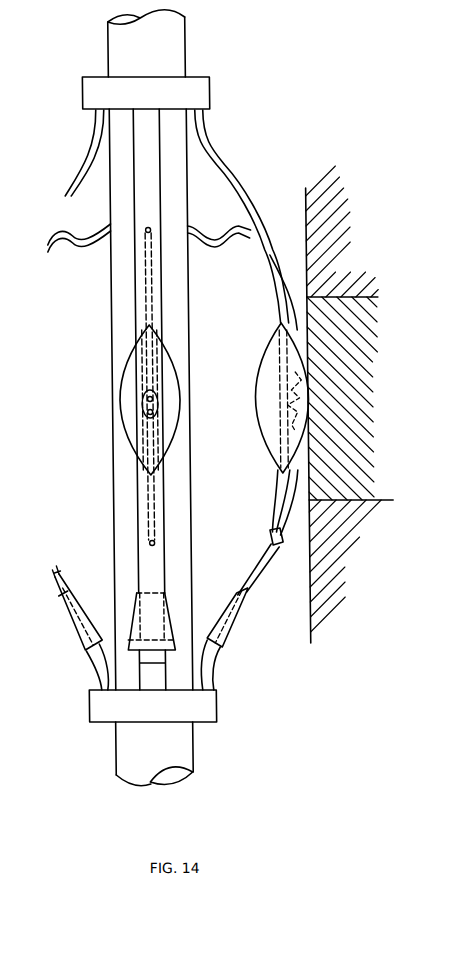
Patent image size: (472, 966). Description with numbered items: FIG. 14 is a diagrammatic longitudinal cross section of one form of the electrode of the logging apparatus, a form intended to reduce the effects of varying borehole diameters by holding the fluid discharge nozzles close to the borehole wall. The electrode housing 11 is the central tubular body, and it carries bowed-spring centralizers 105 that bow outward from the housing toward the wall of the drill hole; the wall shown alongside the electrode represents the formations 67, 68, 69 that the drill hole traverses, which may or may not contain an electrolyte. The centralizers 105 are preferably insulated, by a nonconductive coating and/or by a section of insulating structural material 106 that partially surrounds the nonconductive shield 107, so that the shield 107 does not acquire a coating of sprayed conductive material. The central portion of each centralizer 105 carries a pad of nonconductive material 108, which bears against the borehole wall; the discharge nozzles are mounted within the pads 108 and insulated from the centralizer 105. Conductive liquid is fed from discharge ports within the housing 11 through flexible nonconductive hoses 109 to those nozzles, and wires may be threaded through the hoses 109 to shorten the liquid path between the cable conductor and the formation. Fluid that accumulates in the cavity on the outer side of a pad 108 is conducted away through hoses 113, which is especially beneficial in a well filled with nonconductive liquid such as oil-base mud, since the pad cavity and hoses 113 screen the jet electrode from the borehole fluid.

The electrode housing 11 is at (187, 23).
The bowed-spring centralizers 105 is at (89, 152).
The flexible nonconductive hoses 109 is at (80, 246).
The formation 67 is at (327, 240).
The formation 68 is at (331, 384).
The formation 69 is at (331, 560).
The pads of nonconductive material 108 is at (260, 448).
The hoses 113 is at (262, 512).
The nonconductive shield 107 is at (230, 620).
The insulating structural material 106 is at (207, 655).